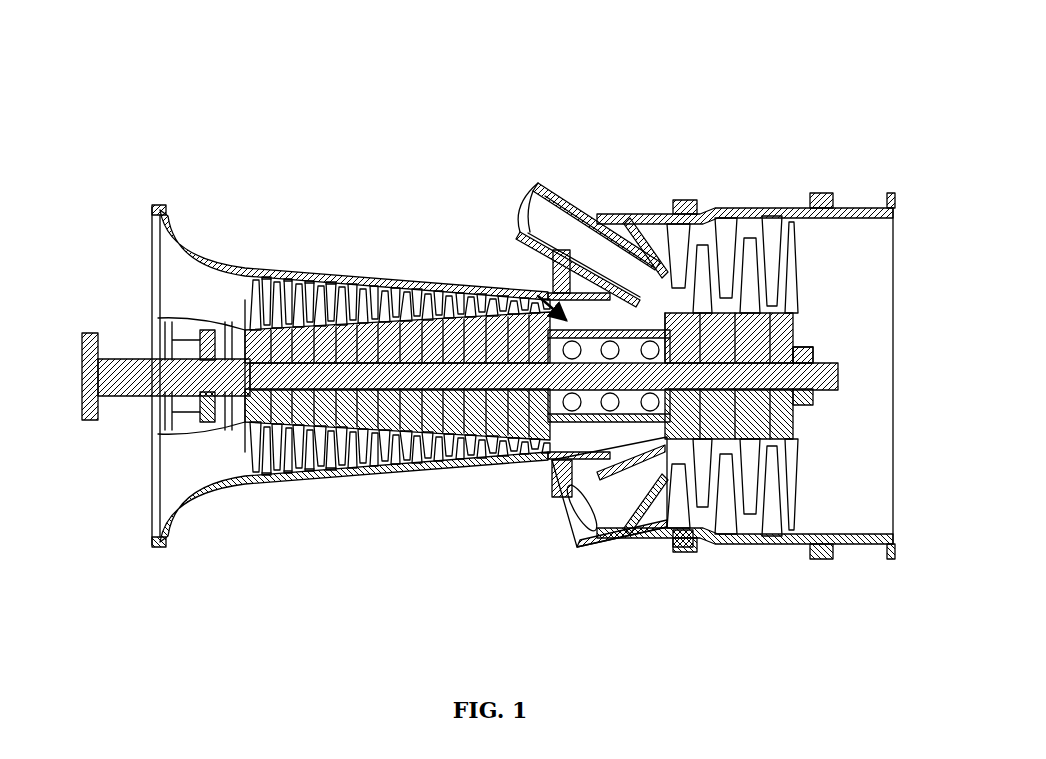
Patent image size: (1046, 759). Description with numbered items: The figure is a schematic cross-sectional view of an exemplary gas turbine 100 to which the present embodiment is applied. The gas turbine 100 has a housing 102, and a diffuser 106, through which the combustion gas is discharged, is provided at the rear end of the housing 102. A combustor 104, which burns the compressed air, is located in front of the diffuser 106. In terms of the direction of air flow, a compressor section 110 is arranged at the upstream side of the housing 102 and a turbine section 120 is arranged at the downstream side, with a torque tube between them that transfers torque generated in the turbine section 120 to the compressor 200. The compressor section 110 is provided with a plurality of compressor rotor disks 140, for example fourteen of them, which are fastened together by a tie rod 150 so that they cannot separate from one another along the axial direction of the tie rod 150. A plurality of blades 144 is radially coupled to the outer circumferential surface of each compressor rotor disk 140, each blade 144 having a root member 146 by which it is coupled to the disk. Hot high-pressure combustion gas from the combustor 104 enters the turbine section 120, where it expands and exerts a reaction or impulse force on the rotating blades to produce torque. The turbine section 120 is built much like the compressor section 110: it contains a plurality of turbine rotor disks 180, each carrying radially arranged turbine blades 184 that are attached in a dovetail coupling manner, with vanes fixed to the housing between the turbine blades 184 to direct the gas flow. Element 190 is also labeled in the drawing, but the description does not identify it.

The gas turbine 100 is at (851, 44).
The housing 102 is at (403, 256).
The combustor 104 is at (540, 180).
The diffuser 106 is at (858, 183).
The compressor section 110 is at (212, 420).
The turbine section 120 is at (663, 520).
The compressor rotor disks 140 is at (296, 282).
The blades 144 is at (292, 292).
The root member 146 is at (316, 290).
The tie rod 150 is at (153, 430).
The turbine rotor disks 180 is at (782, 293).
The turbine blades 184 is at (768, 208).
The turbine rotor disk 190 is at (813, 357).
The compressor 200 is at (545, 238).